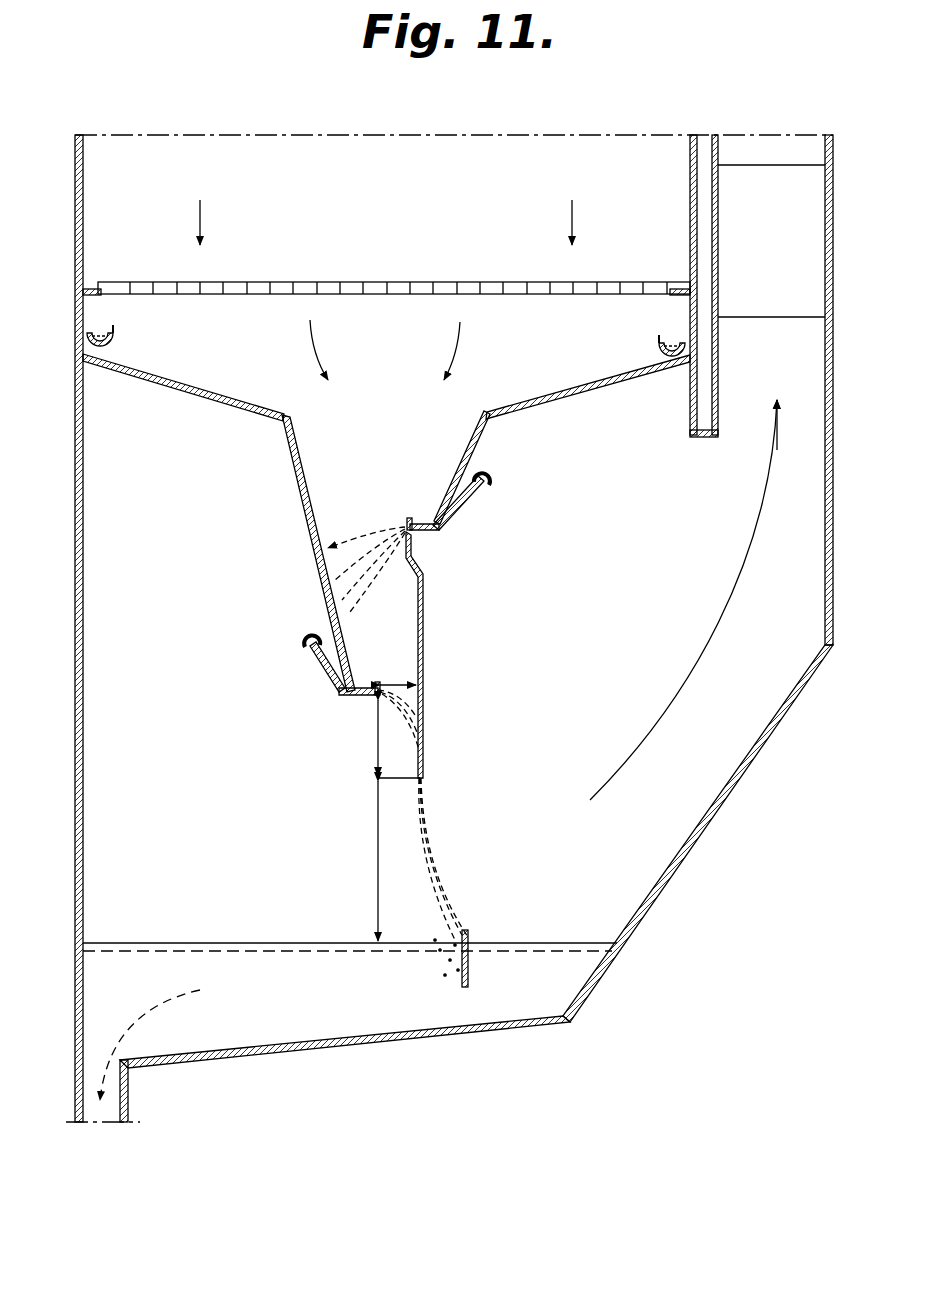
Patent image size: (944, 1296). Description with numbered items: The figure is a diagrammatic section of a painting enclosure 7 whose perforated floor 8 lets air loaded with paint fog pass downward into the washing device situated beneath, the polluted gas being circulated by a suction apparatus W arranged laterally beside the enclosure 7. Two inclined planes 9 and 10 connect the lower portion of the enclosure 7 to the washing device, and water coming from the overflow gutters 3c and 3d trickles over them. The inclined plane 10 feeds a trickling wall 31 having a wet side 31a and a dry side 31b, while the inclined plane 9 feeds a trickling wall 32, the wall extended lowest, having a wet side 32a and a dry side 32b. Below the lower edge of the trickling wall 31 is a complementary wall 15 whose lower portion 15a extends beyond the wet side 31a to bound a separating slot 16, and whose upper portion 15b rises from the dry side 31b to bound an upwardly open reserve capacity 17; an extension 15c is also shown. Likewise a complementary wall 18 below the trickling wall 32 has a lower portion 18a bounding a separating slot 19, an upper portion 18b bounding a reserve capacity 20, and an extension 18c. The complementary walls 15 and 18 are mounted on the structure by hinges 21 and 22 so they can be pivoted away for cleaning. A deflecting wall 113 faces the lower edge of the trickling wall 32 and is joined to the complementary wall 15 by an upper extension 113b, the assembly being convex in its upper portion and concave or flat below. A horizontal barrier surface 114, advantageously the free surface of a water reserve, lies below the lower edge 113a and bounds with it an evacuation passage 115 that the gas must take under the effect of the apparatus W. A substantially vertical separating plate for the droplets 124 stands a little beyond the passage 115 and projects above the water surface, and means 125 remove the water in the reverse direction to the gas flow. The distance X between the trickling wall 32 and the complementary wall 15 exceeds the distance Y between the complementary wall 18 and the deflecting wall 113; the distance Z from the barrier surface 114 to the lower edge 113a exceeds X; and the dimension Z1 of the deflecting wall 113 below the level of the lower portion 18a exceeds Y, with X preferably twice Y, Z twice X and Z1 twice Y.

The painting enclosure 7 is at (83, 183).
The floor 8 is at (418, 282).
The overflow gutter 3c is at (113, 338).
The overflow gutter 3d is at (660, 350).
The inclined plane 9 is at (240, 400).
The inclined plane 10 is at (560, 392).
The trickling wall 31 is at (465, 448).
The wet side 31a is at (480, 422).
The dry side 31b is at (490, 428).
The trickling wall 32 is at (295, 450).
The wet side 32a is at (294, 457).
The dry side 32b is at (308, 493).
The complementary wall 15 is at (448, 520).
The lower portion 15a is at (427, 532).
The upper portion 15b is at (452, 505).
The extension 15c is at (482, 477).
The separating slot 16 is at (432, 528).
The reserve capacity 17 is at (440, 515).
The hinge 21 is at (470, 490).
The complementary wall 18 is at (342, 693).
The lower portion 18a is at (375, 700).
The upper portion 18b is at (335, 660).
The extension 18c is at (308, 636).
The separating slot 19 is at (368, 690).
The reserve capacity 20 is at (357, 688).
The hinge 22 is at (311, 628).
The deflecting wall 113 is at (423, 640).
The lower edge 113a is at (423, 778).
The upper extension 113b is at (391, 582).
The barrier surface 114 is at (557, 943).
The evacuation passage 115 is at (432, 855).
The separating plate for the droplets 124 is at (478, 915).
The means for removing the water 125 is at (128, 1093).
The suction apparatus W is at (757, 292).
The distance X is at (362, 527).
The distance Y is at (398, 672).
The distance Z is at (358, 861).
The dimension Z1 is at (382, 739).